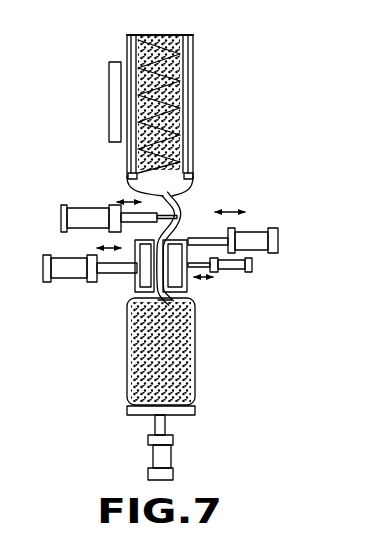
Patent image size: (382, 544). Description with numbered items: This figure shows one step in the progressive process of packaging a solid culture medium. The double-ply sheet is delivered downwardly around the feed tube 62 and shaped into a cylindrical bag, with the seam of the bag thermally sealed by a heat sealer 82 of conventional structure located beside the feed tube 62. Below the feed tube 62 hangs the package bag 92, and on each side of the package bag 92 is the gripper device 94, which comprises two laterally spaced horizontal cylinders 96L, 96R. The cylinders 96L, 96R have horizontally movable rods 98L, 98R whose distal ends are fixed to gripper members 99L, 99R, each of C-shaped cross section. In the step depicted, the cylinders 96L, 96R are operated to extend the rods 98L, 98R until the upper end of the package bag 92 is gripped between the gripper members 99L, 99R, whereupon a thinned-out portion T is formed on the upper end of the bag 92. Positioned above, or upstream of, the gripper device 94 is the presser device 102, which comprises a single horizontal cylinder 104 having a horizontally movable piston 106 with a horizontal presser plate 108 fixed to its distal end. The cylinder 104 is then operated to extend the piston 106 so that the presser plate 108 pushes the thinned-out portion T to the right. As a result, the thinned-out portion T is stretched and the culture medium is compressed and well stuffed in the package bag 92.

The feed tube 62 is at (187, 66).
The heat sealer 82 is at (109, 82).
The presser device 102 is at (62, 190).
The horizontal cylinder 104 is at (96, 214).
The piston 106 is at (137, 230).
The presser plate 108 is at (185, 203).
The horizontally movable rod 98R is at (193, 240).
The cylinder 96R is at (252, 237).
The gripper device 94 is at (292, 240).
The gripper member 99R is at (192, 285).
The horizontally movable rod 98L is at (117, 273).
The cylinder 96L is at (63, 278).
The gripper member 99L is at (133, 287).
The thinned-out portion T is at (175, 300).
The package bag 92 is at (195, 347).